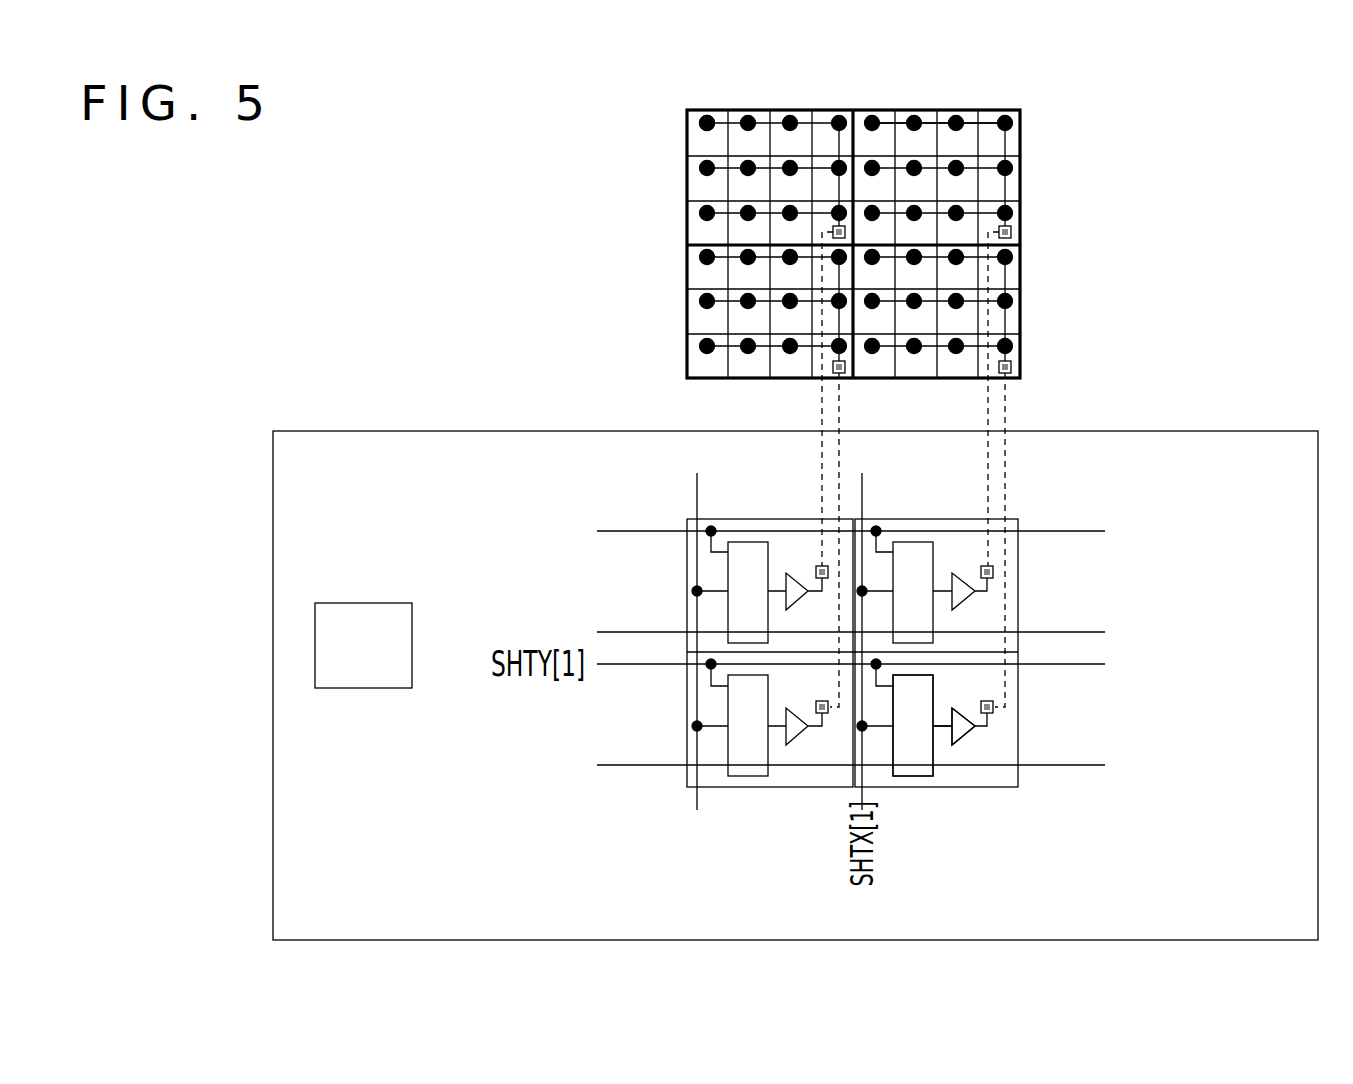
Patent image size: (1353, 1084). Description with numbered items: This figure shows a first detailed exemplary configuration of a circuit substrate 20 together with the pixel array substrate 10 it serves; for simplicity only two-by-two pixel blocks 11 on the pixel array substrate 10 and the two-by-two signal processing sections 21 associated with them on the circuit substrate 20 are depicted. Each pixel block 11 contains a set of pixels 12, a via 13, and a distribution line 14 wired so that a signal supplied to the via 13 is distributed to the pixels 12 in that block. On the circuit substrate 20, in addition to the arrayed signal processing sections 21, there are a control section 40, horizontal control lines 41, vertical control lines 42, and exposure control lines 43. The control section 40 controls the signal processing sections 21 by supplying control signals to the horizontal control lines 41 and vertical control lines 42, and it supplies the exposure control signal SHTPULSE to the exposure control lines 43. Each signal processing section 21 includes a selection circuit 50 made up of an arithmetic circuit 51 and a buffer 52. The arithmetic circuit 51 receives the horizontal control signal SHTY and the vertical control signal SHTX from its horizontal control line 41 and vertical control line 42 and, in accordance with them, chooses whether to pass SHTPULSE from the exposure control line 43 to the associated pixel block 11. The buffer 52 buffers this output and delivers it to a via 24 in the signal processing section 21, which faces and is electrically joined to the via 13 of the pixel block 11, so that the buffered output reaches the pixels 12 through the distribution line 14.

The pixel array substrate 10 is at (903, 110).
The pixel block 11 is at (1020, 137).
The pixel 12 is at (700, 140).
The via 13 is at (1012, 232).
The distribution line 14 is at (1007, 276).
The circuit substrate 20 is at (465, 431).
The signal processing section 21 is at (687, 708).
The via 24 is at (996, 572).
The control section 40 is at (365, 603).
The horizontal control line 41 is at (639, 531).
The vertical control line 42 is at (700, 497).
The exposure control line 43 is at (639, 632).
The selection circuit 50 is at (995, 859).
The arithmetic circuit 51 is at (913, 777).
The buffer 52 is at (962, 741).